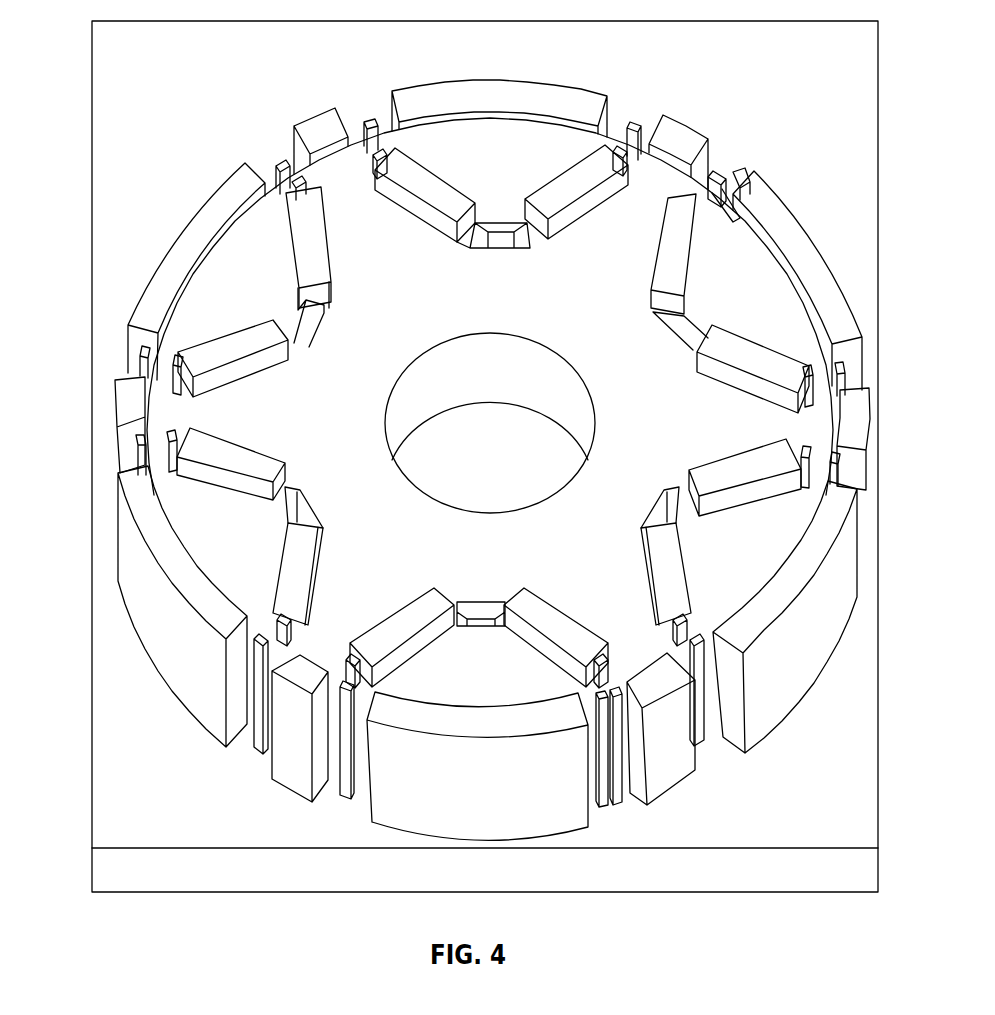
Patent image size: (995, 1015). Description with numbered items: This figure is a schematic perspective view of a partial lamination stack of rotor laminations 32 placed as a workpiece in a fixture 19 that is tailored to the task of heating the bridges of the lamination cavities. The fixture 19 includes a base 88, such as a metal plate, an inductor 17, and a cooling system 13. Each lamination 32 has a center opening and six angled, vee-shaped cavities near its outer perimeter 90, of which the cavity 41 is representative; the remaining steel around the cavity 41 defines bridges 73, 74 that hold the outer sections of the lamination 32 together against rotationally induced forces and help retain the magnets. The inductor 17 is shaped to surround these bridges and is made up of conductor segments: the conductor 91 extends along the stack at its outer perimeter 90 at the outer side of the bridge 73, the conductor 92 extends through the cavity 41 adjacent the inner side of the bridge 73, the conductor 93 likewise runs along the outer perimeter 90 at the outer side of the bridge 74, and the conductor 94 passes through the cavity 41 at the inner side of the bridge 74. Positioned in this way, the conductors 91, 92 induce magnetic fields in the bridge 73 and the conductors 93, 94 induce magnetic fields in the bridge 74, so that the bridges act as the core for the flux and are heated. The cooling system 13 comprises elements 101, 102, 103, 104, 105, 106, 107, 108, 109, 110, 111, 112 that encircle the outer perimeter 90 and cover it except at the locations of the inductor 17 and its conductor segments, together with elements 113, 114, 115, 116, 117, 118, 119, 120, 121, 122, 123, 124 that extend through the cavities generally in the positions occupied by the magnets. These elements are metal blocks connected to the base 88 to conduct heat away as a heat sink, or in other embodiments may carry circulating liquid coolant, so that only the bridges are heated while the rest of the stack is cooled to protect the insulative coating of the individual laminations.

The cooling system 13 is at (134, 620).
The inductor 17 is at (633, 122).
The fixture 19 is at (790, 130).
The lamination 32 is at (585, 332).
The cavity 41 is at (692, 350).
The bridge 73 is at (714, 196).
The bridge 74 is at (858, 415).
The base 88 is at (765, 884).
The outer perimeter 90 is at (533, 120).
The conductor 91 is at (715, 167).
The conductor 92 is at (735, 177).
The conductor 93 is at (845, 368).
The conductor 94 is at (802, 367).
The element 101 is at (778, 218).
The element 102 is at (853, 403).
The element 103 is at (760, 693).
The element 104 is at (678, 770).
The element 105 is at (467, 818).
The element 106 is at (283, 777).
The element 107 is at (207, 703).
The element 108 is at (130, 397).
The element 109 is at (190, 238).
The element 110 is at (317, 132).
The element 111 is at (487, 95).
The element 112 is at (686, 133).
The element 113 is at (668, 267).
The element 114 is at (712, 328).
The element 115 is at (728, 473).
The element 116 is at (663, 582).
The element 117 is at (532, 617).
The element 118 is at (433, 608).
The element 119 is at (300, 567).
The element 120 is at (258, 463).
The element 121 is at (222, 347).
The element 122 is at (326, 243).
The element 123 is at (417, 173).
The element 124 is at (585, 180).